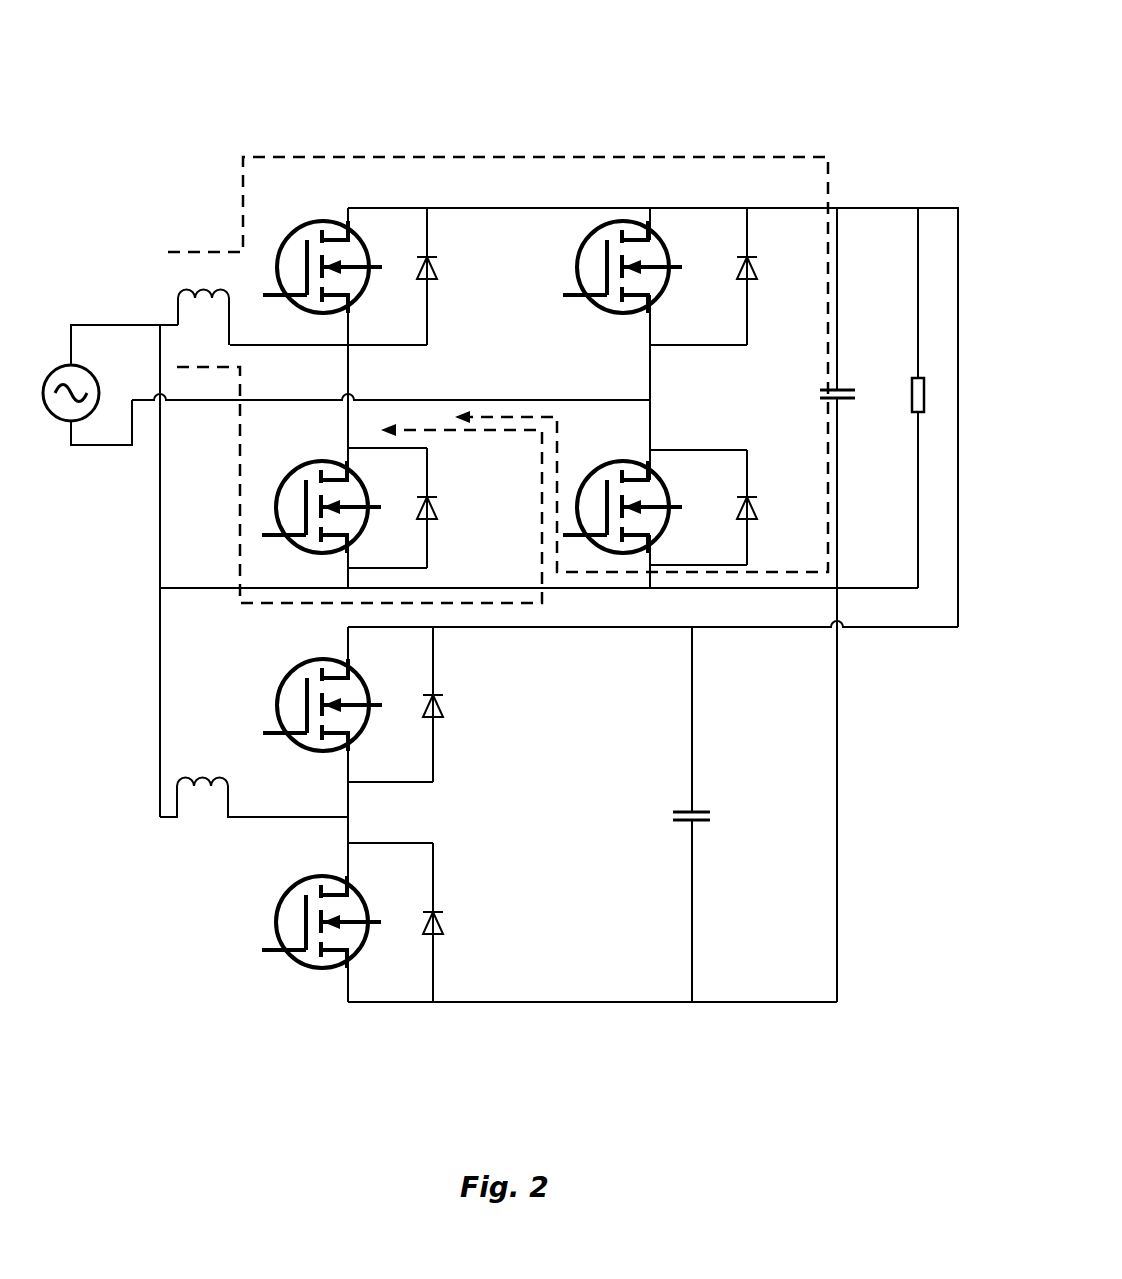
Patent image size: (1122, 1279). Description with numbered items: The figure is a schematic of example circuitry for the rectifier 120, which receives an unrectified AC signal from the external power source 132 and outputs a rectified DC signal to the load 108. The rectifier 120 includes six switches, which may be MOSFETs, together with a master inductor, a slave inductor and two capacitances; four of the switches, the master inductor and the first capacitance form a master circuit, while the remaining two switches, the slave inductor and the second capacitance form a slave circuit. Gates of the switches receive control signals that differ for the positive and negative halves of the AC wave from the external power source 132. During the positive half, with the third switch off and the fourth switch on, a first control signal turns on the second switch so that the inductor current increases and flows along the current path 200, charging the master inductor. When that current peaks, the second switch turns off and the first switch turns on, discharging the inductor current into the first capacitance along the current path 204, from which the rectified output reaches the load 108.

The rectifier 120 is at (712, 70).
The external power source 132 is at (90, 371).
The load 108 is at (918, 378).
The current path 204 is at (213, 252).
The current path 200 is at (240, 477).